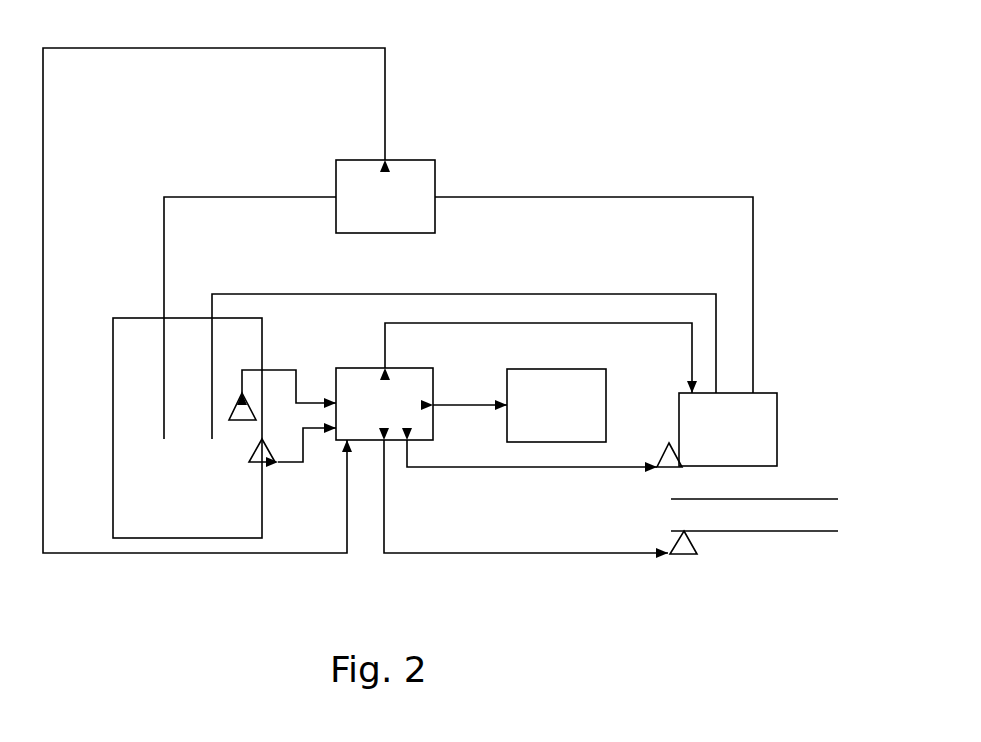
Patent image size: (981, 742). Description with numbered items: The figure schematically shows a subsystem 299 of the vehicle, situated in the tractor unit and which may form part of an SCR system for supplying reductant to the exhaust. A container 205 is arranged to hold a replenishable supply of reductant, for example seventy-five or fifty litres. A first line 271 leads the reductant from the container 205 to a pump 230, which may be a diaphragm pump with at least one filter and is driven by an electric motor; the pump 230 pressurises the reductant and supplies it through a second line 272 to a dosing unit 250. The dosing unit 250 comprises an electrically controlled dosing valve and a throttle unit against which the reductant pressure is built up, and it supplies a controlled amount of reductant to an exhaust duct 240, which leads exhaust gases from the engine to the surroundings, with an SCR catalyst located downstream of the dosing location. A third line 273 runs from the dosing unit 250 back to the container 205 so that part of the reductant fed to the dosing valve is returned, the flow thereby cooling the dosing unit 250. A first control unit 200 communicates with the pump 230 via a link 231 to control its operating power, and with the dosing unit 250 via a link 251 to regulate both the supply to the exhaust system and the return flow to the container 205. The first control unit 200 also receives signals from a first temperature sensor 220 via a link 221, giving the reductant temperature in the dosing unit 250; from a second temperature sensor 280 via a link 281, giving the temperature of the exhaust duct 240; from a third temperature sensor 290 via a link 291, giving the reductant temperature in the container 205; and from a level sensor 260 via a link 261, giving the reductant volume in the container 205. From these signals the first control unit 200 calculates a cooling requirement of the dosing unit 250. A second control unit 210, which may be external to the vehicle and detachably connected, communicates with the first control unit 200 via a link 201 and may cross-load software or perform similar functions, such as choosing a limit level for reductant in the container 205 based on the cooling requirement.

The subsystem 299 is at (482, 64).
The pump 230 is at (385, 196).
The first control unit 200 is at (384, 404).
The second control unit 210 is at (556, 405).
The dosing unit 250 is at (728, 429).
The container 205 is at (138, 316).
The link 231 is at (278, 50).
The first line 271 is at (213, 197).
The second line 272 is at (552, 197).
The third line 273 is at (682, 295).
The link 251 is at (620, 325).
The link 201 is at (458, 400).
The link 291 is at (315, 373).
The third temperature sensor 290 is at (230, 421).
The level sensor 260 is at (250, 465).
The link 261 is at (297, 465).
The link 221 is at (453, 467).
The first temperature sensor 220 is at (665, 457).
The link 281 is at (523, 553).
The second temperature sensor 280 is at (697, 555).
The exhaust duct 240 is at (742, 531).